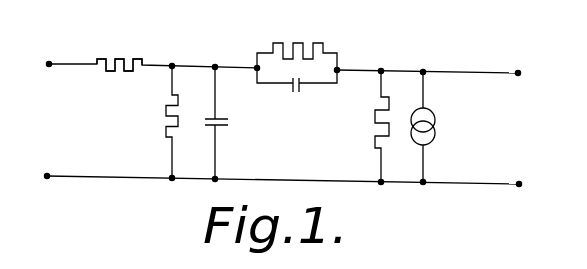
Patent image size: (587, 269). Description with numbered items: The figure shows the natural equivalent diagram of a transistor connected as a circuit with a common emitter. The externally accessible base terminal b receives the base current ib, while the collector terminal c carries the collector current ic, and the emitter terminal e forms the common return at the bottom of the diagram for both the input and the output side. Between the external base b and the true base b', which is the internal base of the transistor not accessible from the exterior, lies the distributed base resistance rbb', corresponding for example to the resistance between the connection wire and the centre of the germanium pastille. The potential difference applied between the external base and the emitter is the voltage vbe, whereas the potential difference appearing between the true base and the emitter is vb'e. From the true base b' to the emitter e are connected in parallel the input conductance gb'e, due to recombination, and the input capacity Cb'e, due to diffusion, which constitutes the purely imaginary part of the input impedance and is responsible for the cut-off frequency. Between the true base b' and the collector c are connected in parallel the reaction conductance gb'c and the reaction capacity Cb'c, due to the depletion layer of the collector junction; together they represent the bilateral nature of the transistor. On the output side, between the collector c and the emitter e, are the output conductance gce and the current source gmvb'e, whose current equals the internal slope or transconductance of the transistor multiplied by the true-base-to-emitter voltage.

The base b is at (50, 53).
The true base b' is at (193, 54).
The collector c is at (517, 62).
The emitter e is at (282, 191).
The base current ib is at (92, 47).
The collector current ic is at (492, 55).
The base-emitter potential difference vbe is at (49, 93).
The true-base-to-emitter potential difference vb'e is at (125, 119).
The distributed base resistance rbb' is at (119, 52).
The input conductance gb'e is at (192, 123).
The input capacity Cb'e is at (235, 124).
The reaction conductance gb'c is at (296, 41).
The reaction capacity Cb'c is at (297, 98).
The output conductance gce is at (358, 126).
The transconductance current source gmvb'e is at (467, 126).